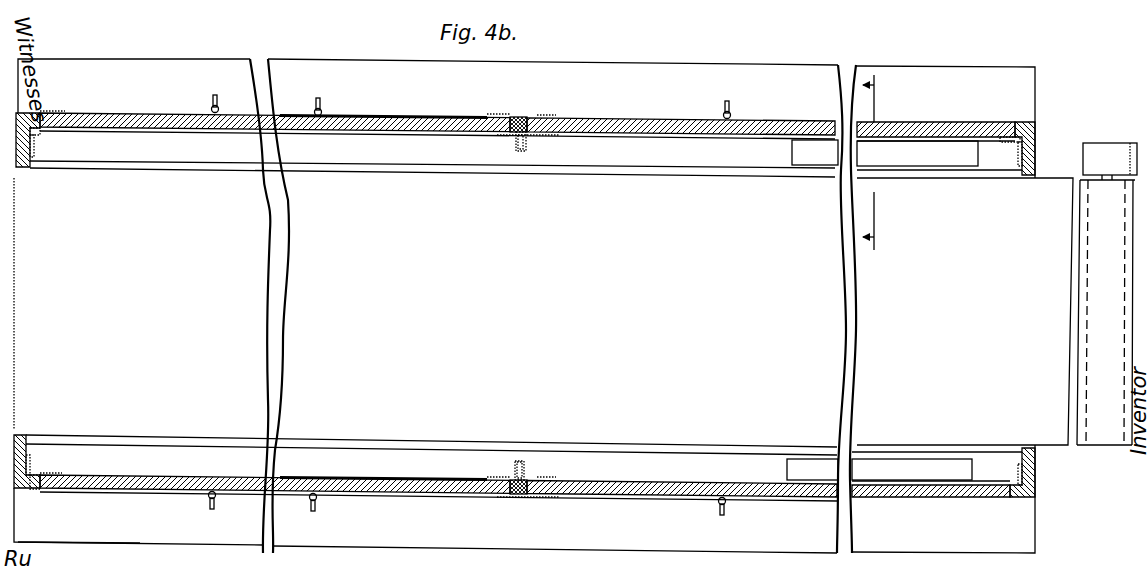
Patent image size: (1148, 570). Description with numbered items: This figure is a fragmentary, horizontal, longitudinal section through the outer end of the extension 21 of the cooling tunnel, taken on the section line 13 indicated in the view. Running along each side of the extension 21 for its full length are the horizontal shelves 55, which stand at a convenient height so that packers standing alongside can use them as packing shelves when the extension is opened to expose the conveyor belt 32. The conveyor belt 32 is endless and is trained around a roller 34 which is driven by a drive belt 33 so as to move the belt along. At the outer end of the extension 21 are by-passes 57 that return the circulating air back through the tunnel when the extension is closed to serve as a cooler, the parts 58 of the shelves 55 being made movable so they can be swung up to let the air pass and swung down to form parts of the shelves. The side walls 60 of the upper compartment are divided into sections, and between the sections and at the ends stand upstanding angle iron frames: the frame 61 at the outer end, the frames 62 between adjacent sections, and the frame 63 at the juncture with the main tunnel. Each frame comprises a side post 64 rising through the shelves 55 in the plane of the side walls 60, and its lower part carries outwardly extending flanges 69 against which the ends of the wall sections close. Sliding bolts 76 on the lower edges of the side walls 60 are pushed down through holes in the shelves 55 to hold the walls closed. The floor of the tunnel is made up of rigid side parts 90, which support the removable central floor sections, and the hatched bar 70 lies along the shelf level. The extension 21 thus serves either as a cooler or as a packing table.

The section line 13 is at (885, 162).
The extension 21 is at (167, 547).
The conveyor belt 32 is at (285, 327).
The drive belt 33 is at (1120, 148).
The roller 34 is at (1117, 448).
The horizontal shelves 55 is at (718, 63).
The by-passes 57 is at (810, 145).
The movable parts of the shelves 58 is at (905, 166).
The side walls 60 is at (437, 112).
The angle iron frame 61 is at (1010, 143).
The angle iron frames 62 is at (524, 118).
The angle iron frame 63 is at (34, 131).
The side post 64 is at (45, 97).
The outwardly extending flanges 69 is at (33, 142).
The bar 70 is at (152, 112).
The sliding bolts 76 is at (217, 94).
The rigid side parts 90 is at (605, 170).